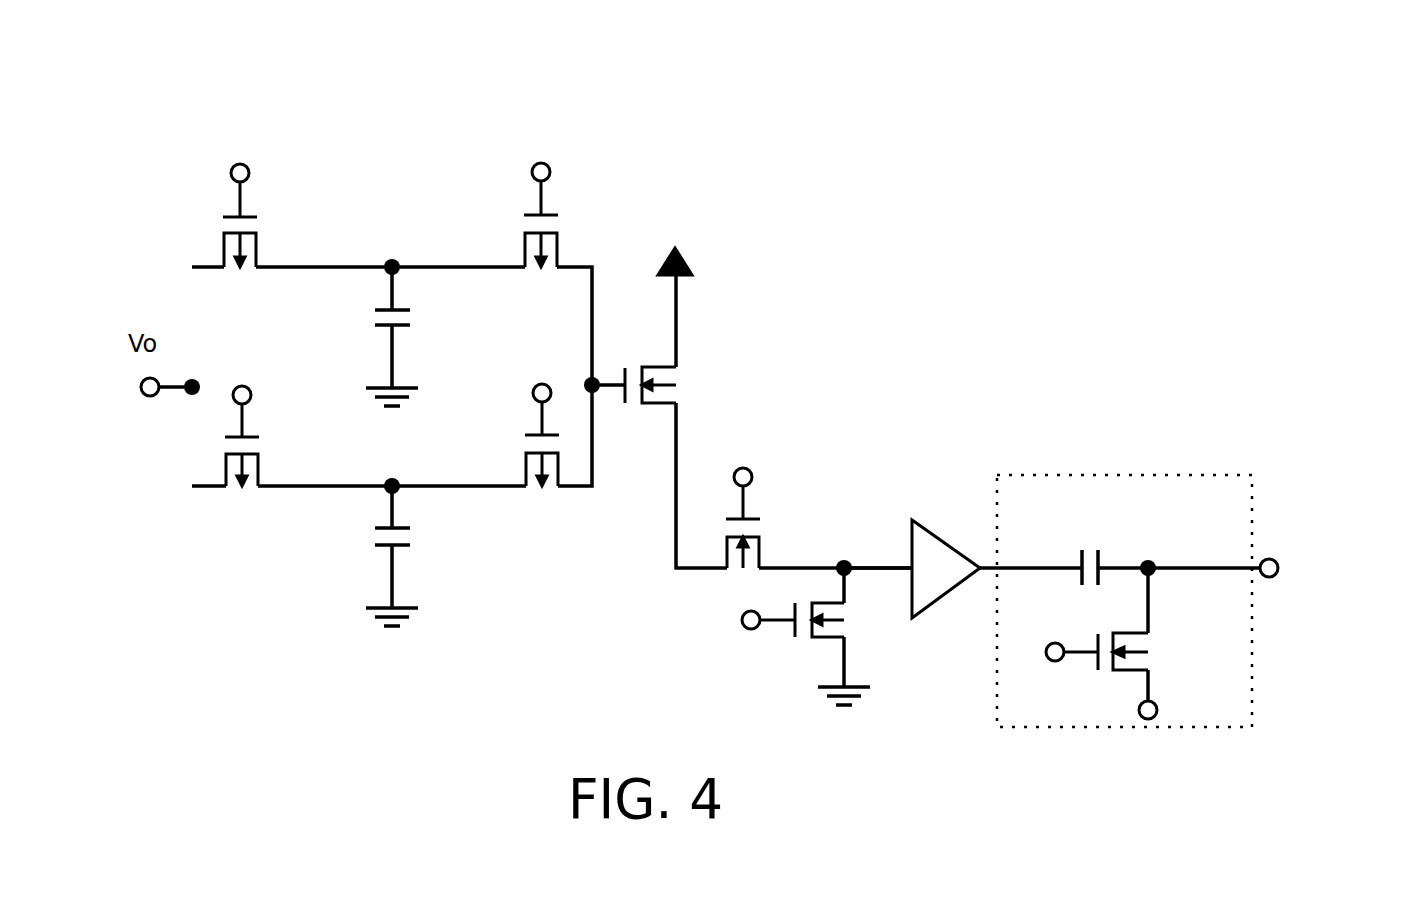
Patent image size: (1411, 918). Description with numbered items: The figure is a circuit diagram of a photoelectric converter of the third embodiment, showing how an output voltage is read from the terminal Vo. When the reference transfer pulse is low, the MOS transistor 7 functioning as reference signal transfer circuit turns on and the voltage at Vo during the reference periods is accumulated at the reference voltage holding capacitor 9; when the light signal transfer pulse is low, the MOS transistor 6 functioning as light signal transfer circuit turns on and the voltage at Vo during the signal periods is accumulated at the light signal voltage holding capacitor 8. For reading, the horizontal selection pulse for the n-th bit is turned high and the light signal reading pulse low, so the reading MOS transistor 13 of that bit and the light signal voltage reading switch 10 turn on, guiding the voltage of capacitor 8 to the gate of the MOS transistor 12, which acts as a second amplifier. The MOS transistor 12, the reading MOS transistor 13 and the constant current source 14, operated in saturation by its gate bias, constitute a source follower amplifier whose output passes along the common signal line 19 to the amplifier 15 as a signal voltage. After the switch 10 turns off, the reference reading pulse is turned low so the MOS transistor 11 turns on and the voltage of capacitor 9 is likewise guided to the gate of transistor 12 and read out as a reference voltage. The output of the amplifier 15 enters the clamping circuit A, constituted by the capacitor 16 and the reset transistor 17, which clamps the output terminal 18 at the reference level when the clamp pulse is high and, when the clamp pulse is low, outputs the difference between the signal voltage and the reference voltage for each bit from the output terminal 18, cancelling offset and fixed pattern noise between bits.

The MOS transistor 6 is at (283, 237).
The MOS transistor 7 is at (237, 503).
The light signal voltage holding capacitor 8 is at (423, 318).
The reference voltage holding capacitor 9 is at (367, 543).
The light signal voltage reading switch 10 is at (567, 237).
The MOS transistor 11 is at (553, 502).
The MOS transistor 12 is at (692, 382).
The reading MOS transistor 13 is at (787, 523).
The constant current source 14 is at (853, 628).
The amplifier 15 is at (925, 520).
The capacitor 16 is at (1122, 546).
The reset transistor 17 is at (1113, 676).
The output terminal 18 is at (1269, 550).
The common signal line 19 is at (845, 553).
The clamping circuit A is at (1070, 470).